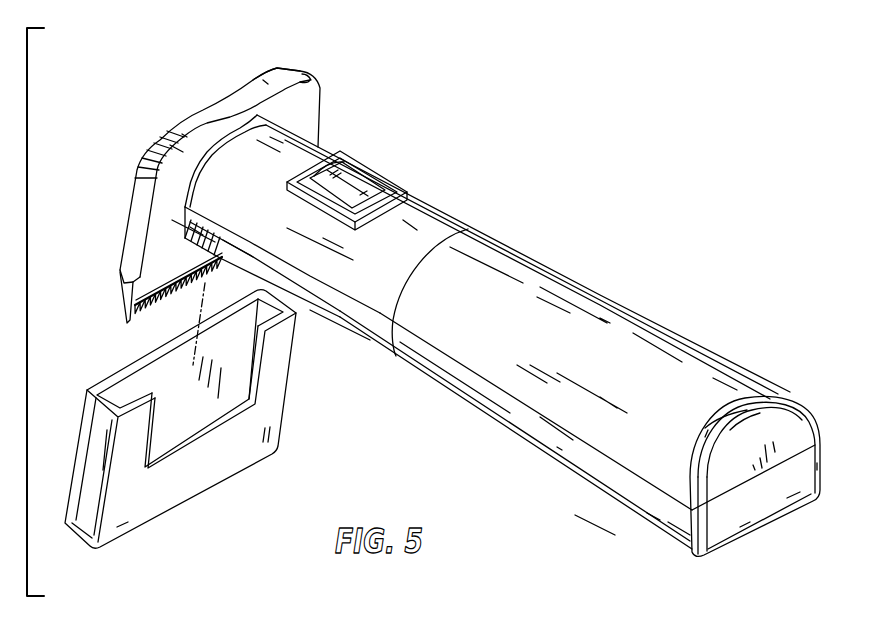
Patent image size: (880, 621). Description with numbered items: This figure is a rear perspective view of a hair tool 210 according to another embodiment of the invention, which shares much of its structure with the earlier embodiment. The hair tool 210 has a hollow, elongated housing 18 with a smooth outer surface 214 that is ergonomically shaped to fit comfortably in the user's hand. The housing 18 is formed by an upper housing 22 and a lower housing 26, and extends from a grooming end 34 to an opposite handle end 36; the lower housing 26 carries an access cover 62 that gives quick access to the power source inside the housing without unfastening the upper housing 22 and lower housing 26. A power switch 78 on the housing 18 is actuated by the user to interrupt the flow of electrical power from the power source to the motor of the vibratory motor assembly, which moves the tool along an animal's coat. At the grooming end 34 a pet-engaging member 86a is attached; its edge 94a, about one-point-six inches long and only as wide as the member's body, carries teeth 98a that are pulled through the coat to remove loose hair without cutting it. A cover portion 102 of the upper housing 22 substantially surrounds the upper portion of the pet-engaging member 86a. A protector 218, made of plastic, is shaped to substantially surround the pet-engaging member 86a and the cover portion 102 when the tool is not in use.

The housing 18 is at (671, 313).
The upper housing 22 is at (760, 387).
The lower housing 26 is at (393, 337).
The grooming end 34 is at (333, 97).
The handle end 36 is at (807, 397).
The access cover 62 is at (600, 467).
The power switch 78 is at (343, 163).
The pet-engaging member 86a is at (118, 285).
The edge 94a is at (127, 312).
The teeth 98a is at (167, 312).
The cover portion 102 is at (273, 67).
The hair tool 210 is at (604, 128).
The smooth outer surface 214 is at (515, 260).
The protector 218 is at (177, 472).